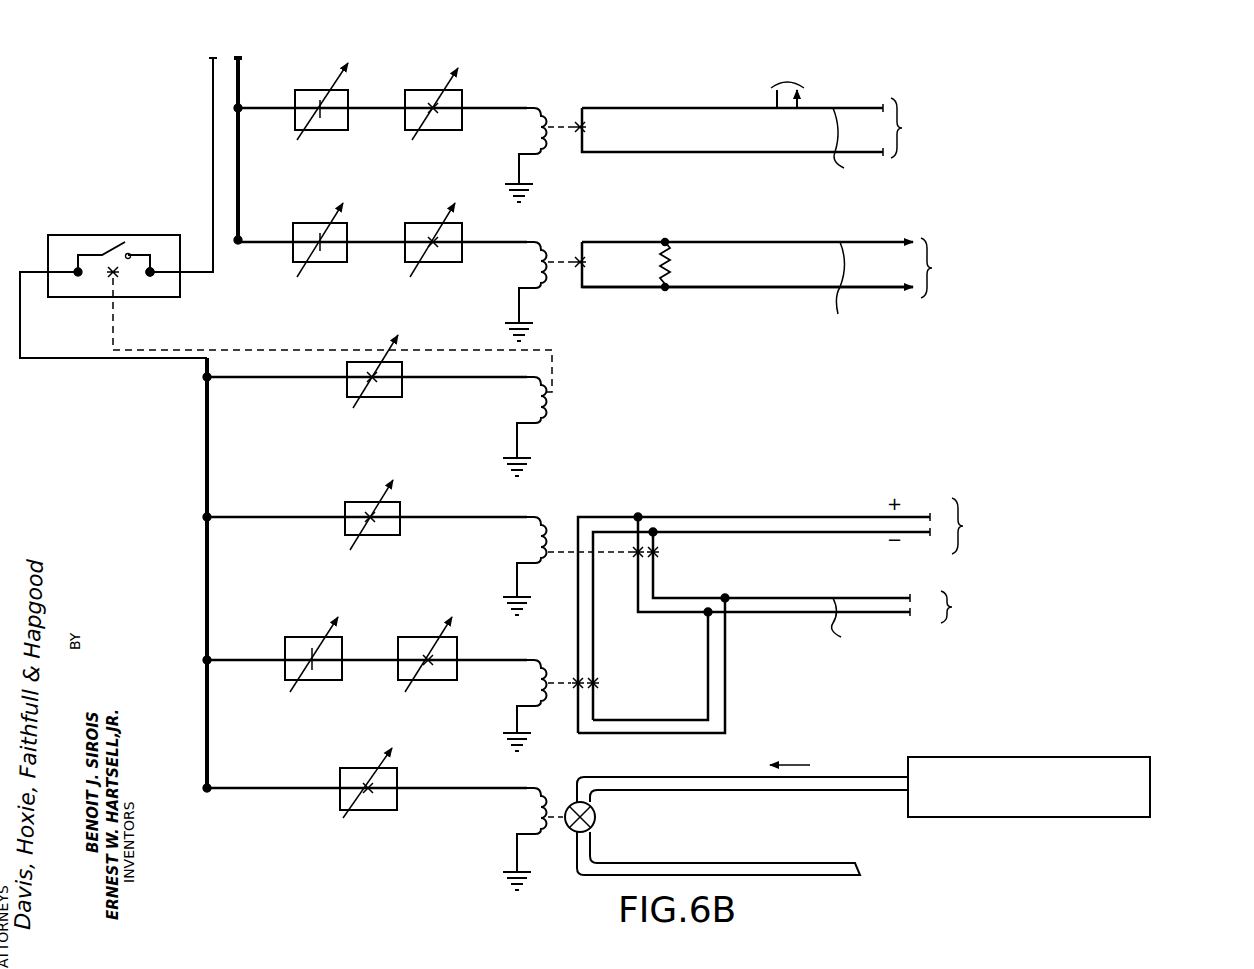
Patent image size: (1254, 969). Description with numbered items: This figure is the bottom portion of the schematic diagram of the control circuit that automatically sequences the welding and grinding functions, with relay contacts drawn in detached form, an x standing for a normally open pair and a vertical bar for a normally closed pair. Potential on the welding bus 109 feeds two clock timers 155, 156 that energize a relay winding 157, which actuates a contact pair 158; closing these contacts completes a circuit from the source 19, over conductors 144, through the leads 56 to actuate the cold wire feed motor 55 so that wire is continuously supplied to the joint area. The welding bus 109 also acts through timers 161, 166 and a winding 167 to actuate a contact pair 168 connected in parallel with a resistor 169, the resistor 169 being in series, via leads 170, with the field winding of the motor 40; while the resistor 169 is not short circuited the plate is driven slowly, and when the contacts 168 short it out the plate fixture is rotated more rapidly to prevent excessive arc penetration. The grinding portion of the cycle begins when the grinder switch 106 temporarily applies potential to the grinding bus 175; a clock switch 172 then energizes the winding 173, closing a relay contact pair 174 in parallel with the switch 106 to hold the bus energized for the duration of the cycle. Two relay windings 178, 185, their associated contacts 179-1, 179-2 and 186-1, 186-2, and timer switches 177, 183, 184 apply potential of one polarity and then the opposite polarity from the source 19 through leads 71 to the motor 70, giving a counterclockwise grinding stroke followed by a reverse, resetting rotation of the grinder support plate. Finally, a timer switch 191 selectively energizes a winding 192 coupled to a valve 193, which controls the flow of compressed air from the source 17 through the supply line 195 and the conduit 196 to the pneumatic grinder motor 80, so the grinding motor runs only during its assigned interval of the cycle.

The compressed air source 17 is at (1150, 787).
The potential source 19 is at (907, 298).
The motor 40 is at (1021, 268).
The cold wire feed motor 55 is at (975, 128).
The leads 56 is at (732, 151).
The motor 70 is at (1014, 607).
The conductors to motor 70 71 is at (744, 663).
The pneumatic grinder motor 80 is at (981, 874).
The grinding cycle actuating switch 106 is at (158, 228).
The welding bus 109 is at (238, 162).
The conductors from potential source 144 is at (801, 104).
The clock timer 155 is at (317, 74).
The clock timer 156 is at (460, 84).
The relay winding 157 is at (549, 112).
The contact pair 158 is at (586, 128).
The timer 161 is at (318, 210).
The timer 166 is at (430, 210).
The winding 167 is at (549, 246).
The contact pair 168 is at (586, 262).
The resistor 169 is at (671, 267).
The conductors to field winding 170 is at (747, 292).
The clock switch 172 is at (345, 397).
The winding 173 is at (545, 406).
The relay contact pair 174 is at (152, 275).
The grinding bus 175 is at (205, 549).
The timer switch 177 is at (398, 498).
The relay winding 178 is at (549, 521).
The contact 179-1 is at (632, 556).
The contact 179-2 is at (659, 556).
The timer switch 183 is at (294, 620).
The timer switch 184 is at (424, 622).
The relay winding 185 is at (522, 695).
The contact 186-1 is at (581, 678).
The contact 186-2 is at (599, 684).
The timer switch 191 is at (364, 745).
The winding 192 is at (520, 823).
The valve 193 is at (597, 816).
The air supply line 195 is at (747, 793).
The conduit 196 is at (688, 862).